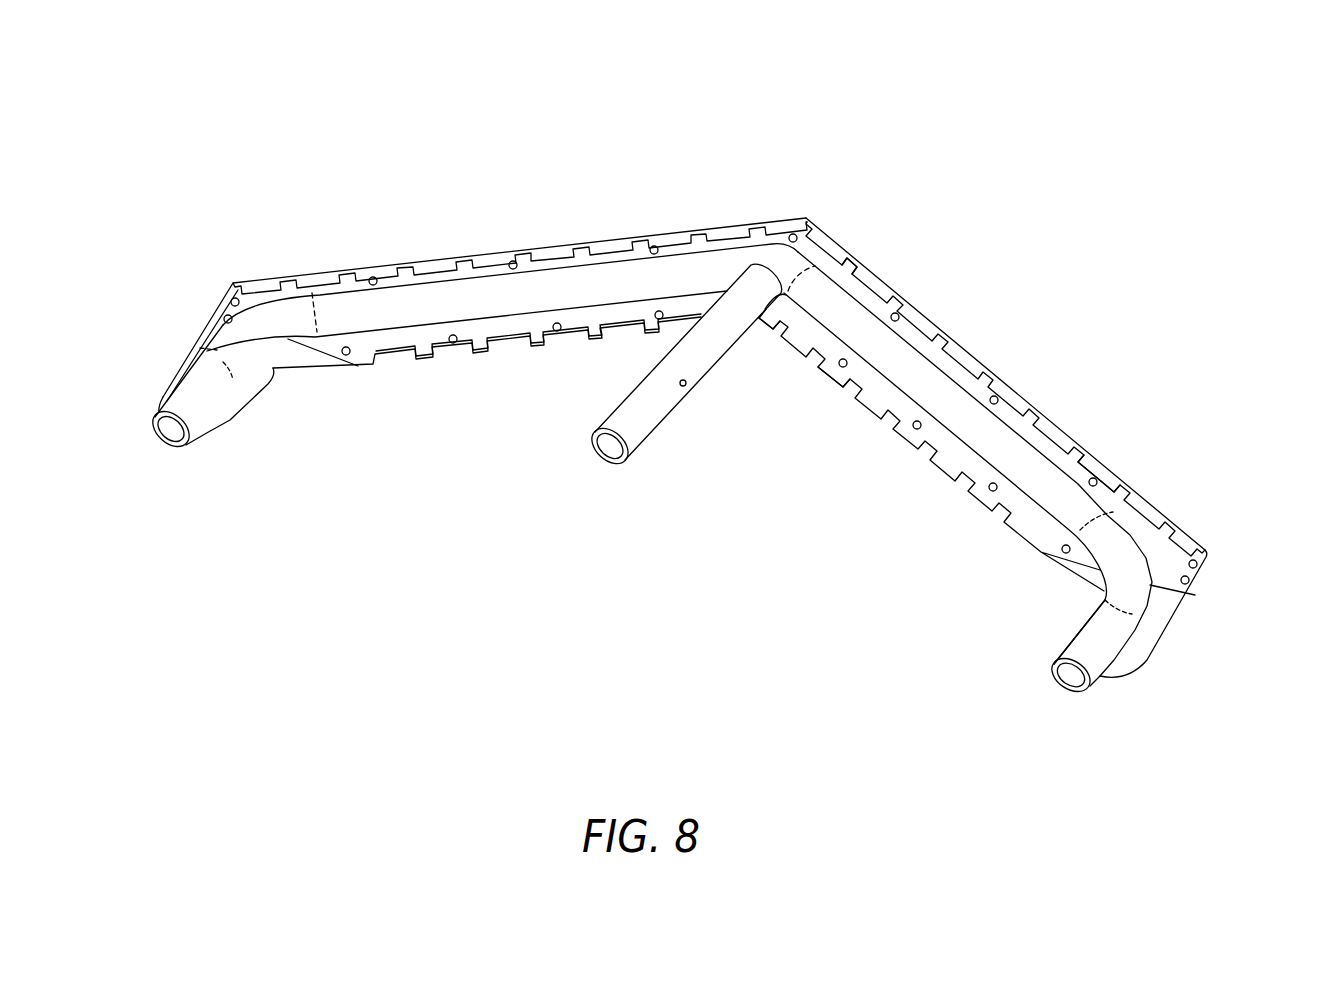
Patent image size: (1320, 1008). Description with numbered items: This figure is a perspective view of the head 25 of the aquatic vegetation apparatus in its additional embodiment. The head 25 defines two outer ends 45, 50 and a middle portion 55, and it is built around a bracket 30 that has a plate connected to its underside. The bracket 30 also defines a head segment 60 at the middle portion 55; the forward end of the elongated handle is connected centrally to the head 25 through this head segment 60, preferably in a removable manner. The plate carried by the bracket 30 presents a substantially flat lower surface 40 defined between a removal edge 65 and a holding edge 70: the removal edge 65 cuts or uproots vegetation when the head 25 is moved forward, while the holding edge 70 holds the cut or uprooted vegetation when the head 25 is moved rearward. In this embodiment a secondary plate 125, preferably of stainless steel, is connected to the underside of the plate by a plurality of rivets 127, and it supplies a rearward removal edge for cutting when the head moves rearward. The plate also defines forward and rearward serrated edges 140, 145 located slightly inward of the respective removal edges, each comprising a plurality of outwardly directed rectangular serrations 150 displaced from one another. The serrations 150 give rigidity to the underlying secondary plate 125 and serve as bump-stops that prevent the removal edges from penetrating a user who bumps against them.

The head 25 is at (236, 146).
The bracket 30 is at (560, 285).
The lower surface 40 is at (1027, 393).
The outer end 45 is at (1184, 652).
The outer end 50 is at (152, 369).
The middle portion 55 is at (727, 201).
The head segment 60 is at (646, 428).
The removal edge 65 is at (953, 346).
The holding edge 70 is at (447, 370).
The secondary plate 125 is at (940, 463).
The rivets 127 is at (1097, 475).
The forward serrated edge 140 is at (892, 280).
The rearward serrated edge 145 is at (836, 394).
The rectangular serrations 150 is at (842, 252).